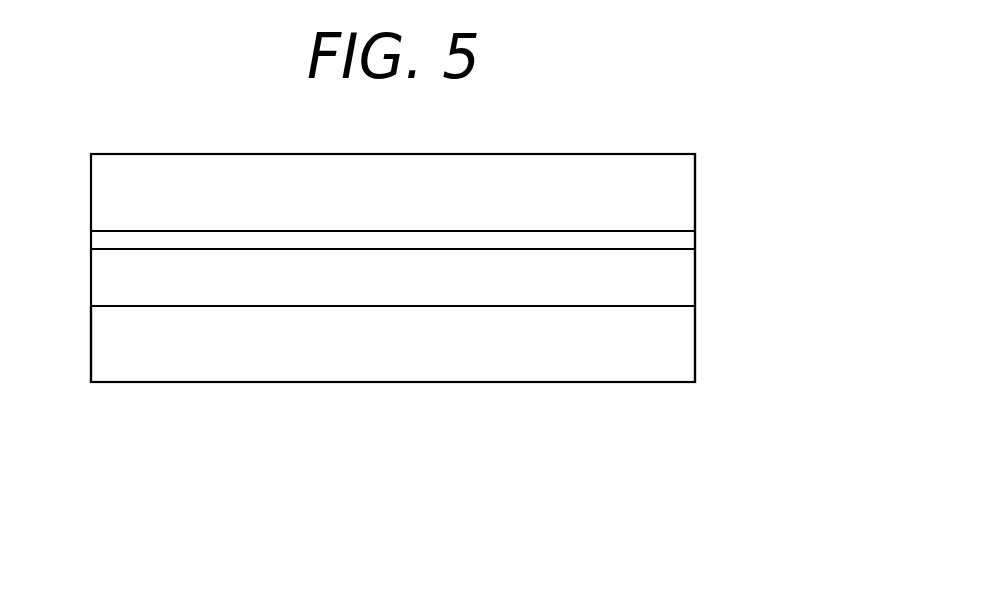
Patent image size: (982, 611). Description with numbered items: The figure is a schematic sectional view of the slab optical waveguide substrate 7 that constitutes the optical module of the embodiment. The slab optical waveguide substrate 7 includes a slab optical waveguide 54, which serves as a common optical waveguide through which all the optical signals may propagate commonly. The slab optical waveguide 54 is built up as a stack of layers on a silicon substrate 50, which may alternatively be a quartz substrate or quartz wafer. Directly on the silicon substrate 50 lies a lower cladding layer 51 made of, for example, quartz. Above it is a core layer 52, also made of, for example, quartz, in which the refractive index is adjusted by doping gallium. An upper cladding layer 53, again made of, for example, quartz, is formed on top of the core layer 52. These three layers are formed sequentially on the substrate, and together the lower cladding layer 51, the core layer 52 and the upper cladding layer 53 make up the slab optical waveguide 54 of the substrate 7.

The slab optical waveguide substrate 7 is at (429, 398).
The silicon substrate 50 is at (678, 347).
The lower cladding layer 51 is at (683, 283).
The core layer 52 is at (676, 238).
The upper cladding layer 53 is at (675, 195).
The slab optical waveguide 54 is at (797, 300).